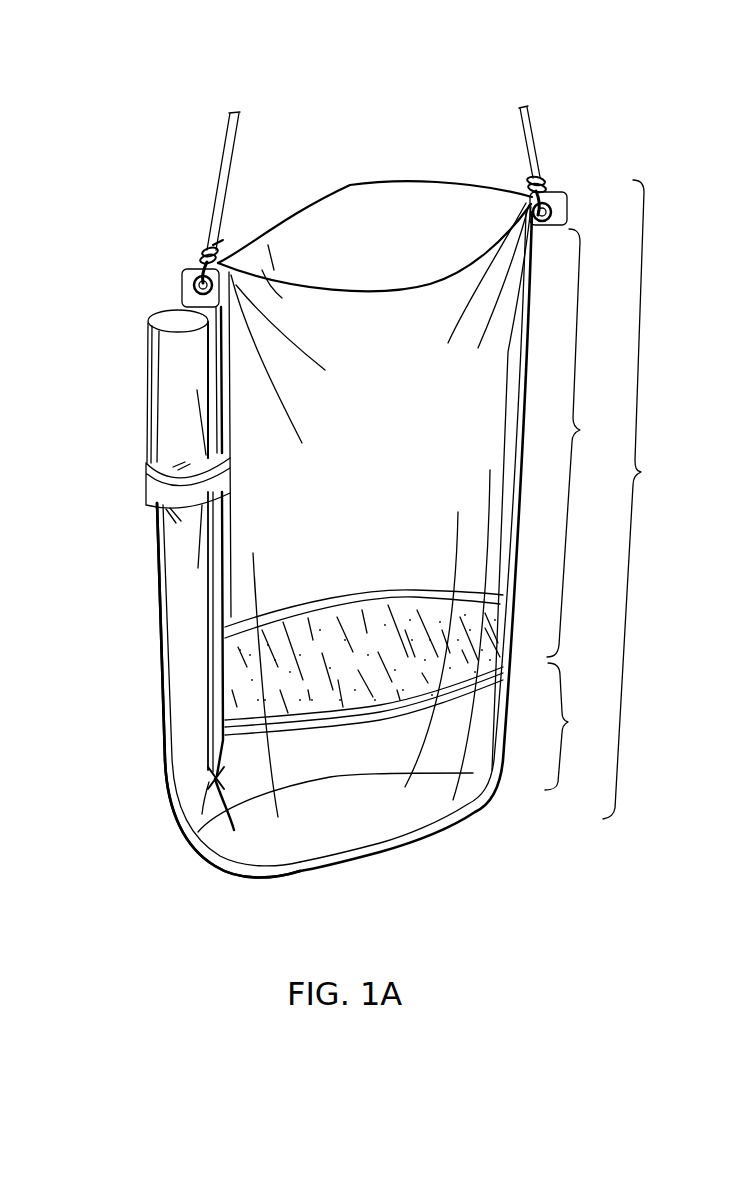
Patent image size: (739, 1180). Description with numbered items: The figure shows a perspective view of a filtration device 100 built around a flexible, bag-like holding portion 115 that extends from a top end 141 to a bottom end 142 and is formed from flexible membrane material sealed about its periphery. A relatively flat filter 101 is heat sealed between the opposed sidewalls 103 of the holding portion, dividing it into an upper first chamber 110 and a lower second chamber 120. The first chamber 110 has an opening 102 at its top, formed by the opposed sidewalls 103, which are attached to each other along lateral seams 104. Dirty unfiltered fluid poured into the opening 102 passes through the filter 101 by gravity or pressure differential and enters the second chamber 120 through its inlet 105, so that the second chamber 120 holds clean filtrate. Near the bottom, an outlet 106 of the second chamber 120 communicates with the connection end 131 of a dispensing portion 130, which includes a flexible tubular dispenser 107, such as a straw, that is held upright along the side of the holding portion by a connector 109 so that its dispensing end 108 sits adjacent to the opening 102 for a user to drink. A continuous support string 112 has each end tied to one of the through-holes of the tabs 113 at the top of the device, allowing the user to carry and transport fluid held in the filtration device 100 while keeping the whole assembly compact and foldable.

The filtration device 100 is at (357, 95).
The filter 101 is at (477, 617).
The opening 102 is at (448, 221).
The opposed sidewalls 103 is at (420, 286).
The lateral seams 104 is at (511, 403).
The inlet of the second chamber 105 is at (447, 693).
The outlet 106 is at (190, 840).
The tubular dispenser 107 is at (167, 645).
The dispensing end 108 is at (150, 320).
The connector 109 is at (146, 478).
The first chamber 110 is at (586, 443).
The support ties and/or strings 112 is at (533, 141).
The tabs with through-holes 113 is at (564, 198).
The holding portion 115 is at (645, 499).
The second chamber 120 is at (579, 726).
The dispensing portion 130 is at (142, 577).
The connection end 131 is at (194, 797).
The top end 141 is at (224, 262).
The bottom end 142 is at (353, 838).